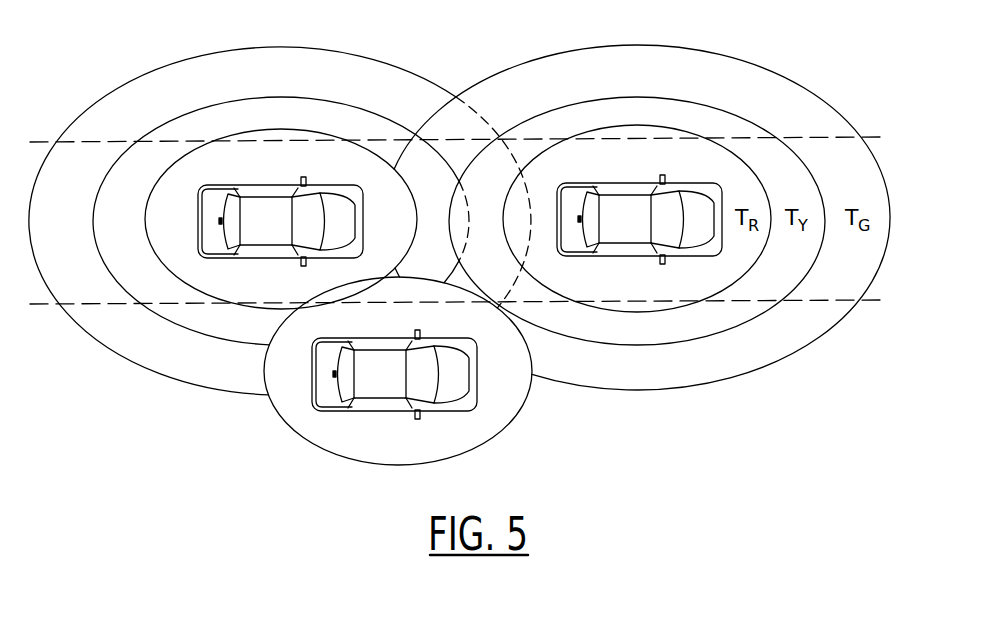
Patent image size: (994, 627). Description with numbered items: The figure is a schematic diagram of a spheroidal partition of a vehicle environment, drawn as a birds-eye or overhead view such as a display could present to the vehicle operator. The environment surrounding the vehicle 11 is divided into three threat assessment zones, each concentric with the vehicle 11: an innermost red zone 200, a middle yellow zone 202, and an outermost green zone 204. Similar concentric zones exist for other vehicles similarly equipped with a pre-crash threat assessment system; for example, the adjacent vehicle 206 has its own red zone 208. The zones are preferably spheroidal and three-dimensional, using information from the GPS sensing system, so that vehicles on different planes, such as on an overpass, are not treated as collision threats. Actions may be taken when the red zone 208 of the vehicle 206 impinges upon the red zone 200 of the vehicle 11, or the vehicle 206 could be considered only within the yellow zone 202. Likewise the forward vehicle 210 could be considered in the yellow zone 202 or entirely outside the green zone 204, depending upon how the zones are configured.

The vehicle 11 is at (276, 230).
The red zone 200 is at (193, 237).
The yellow zone 202 is at (140, 237).
The green zone 204 is at (78, 237).
The vehicle 206 is at (363, 377).
The red zone 208 is at (394, 392).
The forward vehicle 210 is at (612, 207).